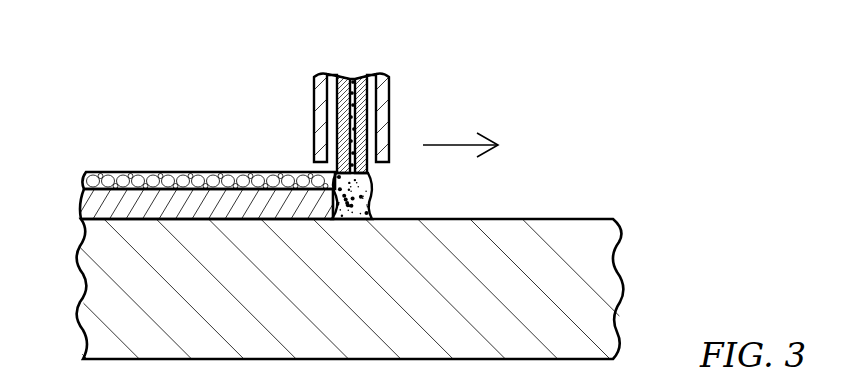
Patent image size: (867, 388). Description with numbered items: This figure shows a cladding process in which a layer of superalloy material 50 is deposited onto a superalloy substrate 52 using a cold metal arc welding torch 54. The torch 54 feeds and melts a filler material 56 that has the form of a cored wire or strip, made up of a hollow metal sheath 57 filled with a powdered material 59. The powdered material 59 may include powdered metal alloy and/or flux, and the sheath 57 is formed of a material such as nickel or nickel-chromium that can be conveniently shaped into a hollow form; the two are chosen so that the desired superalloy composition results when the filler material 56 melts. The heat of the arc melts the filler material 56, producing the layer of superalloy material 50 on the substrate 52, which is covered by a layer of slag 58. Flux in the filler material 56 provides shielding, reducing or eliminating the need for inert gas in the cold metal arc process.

The layer of superalloy material 50 is at (93, 205).
The superalloy substrate 52 is at (90, 278).
The cold metal arc welding torch 54 is at (305, 100).
The filler material 56 is at (352, 73).
The hollow metal sheath 57 is at (366, 88).
The layer of slag 58 is at (97, 183).
The powdered material 59 is at (353, 123).